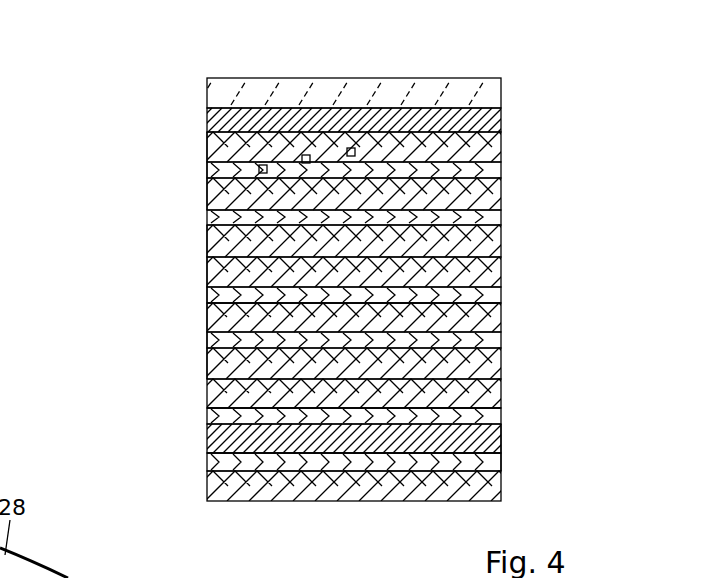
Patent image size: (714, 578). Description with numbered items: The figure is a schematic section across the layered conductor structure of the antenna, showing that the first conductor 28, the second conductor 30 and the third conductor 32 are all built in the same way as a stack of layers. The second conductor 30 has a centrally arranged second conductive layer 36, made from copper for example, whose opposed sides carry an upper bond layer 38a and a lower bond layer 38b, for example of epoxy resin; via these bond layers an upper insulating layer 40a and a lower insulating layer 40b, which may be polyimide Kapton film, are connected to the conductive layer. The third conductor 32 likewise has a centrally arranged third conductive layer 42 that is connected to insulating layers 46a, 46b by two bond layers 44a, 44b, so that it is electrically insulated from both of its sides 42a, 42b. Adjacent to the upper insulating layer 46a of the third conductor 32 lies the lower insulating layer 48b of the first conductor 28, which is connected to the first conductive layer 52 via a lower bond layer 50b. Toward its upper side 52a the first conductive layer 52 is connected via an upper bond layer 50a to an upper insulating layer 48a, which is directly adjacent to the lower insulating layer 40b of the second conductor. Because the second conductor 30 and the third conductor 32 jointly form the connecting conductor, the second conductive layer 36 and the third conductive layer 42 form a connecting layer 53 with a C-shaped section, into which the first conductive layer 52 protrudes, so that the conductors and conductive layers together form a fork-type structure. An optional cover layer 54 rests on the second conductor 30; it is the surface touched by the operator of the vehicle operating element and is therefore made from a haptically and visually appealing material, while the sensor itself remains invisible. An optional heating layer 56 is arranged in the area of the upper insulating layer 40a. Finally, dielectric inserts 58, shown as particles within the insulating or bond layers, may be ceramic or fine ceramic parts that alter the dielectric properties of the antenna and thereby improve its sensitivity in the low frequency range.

The first conductor 28 is at (96, 310).
The second conductor 30 is at (106, 180).
The third conductor 32 is at (512, 446).
The second conductive layer 36 is at (212, 195).
The upper bond layer 38a is at (492, 172).
The lower bond layer 38b is at (492, 221).
The upper insulating layer 40a is at (490, 152).
The lower insulating layer 40b is at (212, 243).
The third conductive layer 42 is at (220, 441).
The upper side of third conductive layer 42a is at (485, 402).
The lower side of third conductive layer 42b is at (361, 460).
The upper bond layer 44a is at (497, 422).
The lower bond layer 44b is at (497, 463).
The upper insulating layer 46a is at (228, 395).
The lower insulating layer 46b is at (212, 488).
The upper insulating layer 48a is at (492, 275).
The lower insulating layer 48b is at (212, 361).
The upper bond layer 50a is at (490, 297).
The lower bond layer 50b is at (492, 343).
The first conductive layer 52 is at (212, 318).
The upper side of first conductive layer 52a is at (222, 295).
The connecting layer 53 is at (118, 260).
The cover layer 54 is at (402, 95).
The heating layer 56 is at (220, 127).
The dielectric inserts 58 is at (352, 148).